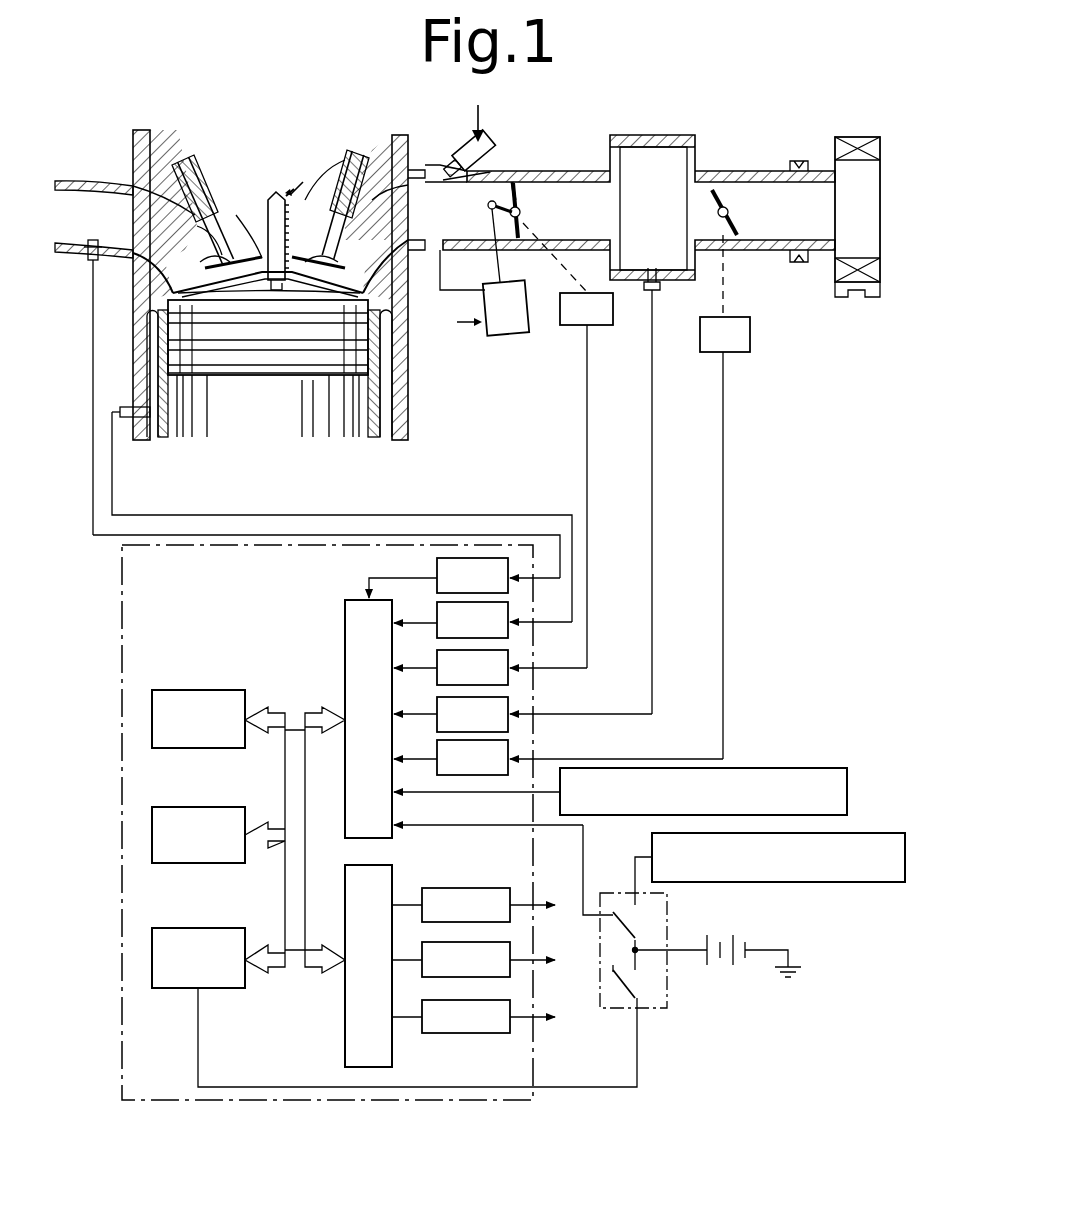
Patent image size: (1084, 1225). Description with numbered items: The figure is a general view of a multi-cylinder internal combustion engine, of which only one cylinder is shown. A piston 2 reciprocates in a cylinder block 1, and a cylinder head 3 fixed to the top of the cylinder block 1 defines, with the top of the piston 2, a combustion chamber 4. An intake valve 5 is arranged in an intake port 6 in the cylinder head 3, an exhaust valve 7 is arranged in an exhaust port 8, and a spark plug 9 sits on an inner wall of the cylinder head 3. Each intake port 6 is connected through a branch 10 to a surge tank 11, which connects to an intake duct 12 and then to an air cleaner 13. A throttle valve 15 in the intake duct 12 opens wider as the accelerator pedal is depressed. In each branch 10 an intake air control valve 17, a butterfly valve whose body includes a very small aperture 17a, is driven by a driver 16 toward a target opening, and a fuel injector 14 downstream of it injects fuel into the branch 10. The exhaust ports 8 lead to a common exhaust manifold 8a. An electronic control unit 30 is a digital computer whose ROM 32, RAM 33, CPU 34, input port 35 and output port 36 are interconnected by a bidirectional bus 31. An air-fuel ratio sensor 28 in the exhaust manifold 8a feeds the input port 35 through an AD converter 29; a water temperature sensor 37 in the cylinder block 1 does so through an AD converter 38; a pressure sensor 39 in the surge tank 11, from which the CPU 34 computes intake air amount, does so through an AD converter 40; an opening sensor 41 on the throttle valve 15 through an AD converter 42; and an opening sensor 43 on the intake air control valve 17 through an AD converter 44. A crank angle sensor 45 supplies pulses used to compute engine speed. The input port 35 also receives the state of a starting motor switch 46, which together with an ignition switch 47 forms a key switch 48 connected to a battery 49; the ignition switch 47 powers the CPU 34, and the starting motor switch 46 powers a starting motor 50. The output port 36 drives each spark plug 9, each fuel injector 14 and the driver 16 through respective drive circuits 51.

The cylinder block 1 is at (133, 345).
The piston 2 is at (300, 385).
The cylinder head 3 is at (405, 280).
The combustion chamber 4 is at (255, 300).
The intake valve 5 is at (337, 250).
The intake port 6 is at (393, 197).
The exhaust valve 7 is at (250, 200).
The exhaust port 8 is at (163, 207).
The exhaust manifold 8a is at (105, 180).
The spark plug 9 is at (267, 200).
The branch 10 is at (600, 168).
The surge tank 11 is at (660, 135).
The intake duct 12 is at (758, 170).
The air cleaner 13 is at (858, 138).
The fuel injector 14 is at (492, 150).
The throttle valve 15 is at (735, 222).
The driver 16 is at (515, 335).
The intake air control valve 17 is at (525, 225).
The aperture 17a is at (520, 182).
The air-fuel ratio sensor 28 is at (90, 265).
The AD converter 29 is at (436, 565).
The electronic control unit 30 is at (120, 680).
The bidirectional bus 31 is at (290, 970).
The read-only memory (ROM) 32 is at (210, 690).
The random-access memory (RAM) 33 is at (206, 807).
The CPU 34 is at (200, 928).
The input port 35 is at (345, 605).
The output port 36 is at (322, 1045).
The water temperature sensor 37 is at (130, 420).
The AD converter 38 is at (437, 615).
The pressure sensor 39 is at (645, 290).
The AD converter 40 is at (437, 706).
The opening sensor 41 is at (752, 335).
The AD converter 42 is at (437, 750).
The opening sensor 43 is at (597, 325).
The AD converter 44 is at (437, 660).
The crank angle sensor 45 is at (760, 768).
The starting motor switch 46 is at (660, 908).
The ignition switch 47 is at (618, 1018).
The key switch 48 is at (668, 995).
The battery 49 is at (725, 968).
The starting motor 50 is at (885, 833).
The drive circuit 51 is at (478, 888).